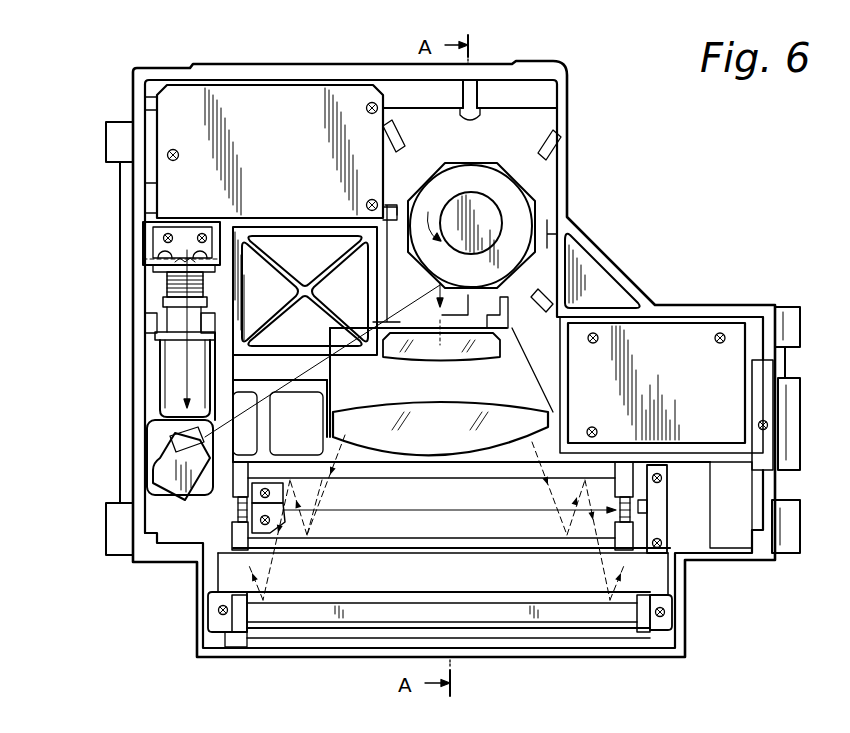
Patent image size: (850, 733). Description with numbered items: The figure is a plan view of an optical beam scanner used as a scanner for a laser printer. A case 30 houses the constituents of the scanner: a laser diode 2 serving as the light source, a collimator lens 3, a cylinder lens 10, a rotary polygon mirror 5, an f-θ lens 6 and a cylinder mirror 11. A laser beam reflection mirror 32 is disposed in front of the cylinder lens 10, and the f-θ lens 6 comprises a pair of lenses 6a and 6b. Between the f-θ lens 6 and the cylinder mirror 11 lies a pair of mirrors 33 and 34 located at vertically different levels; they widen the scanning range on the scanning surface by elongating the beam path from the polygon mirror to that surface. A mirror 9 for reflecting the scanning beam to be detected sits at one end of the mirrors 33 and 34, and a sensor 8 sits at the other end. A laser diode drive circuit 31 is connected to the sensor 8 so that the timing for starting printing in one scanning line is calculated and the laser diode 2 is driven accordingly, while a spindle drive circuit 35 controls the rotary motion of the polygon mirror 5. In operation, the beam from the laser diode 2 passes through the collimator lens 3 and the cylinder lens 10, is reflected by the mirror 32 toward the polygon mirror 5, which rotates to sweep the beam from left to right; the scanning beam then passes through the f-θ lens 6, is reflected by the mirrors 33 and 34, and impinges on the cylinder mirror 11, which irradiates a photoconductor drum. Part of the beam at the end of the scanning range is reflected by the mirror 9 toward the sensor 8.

The laser diode 2 is at (147, 243).
The collimator lens 3 is at (165, 283).
The rotary polygon mirror 5 is at (513, 190).
The f-θ lens 6 is at (505, 365).
The lens 6a is at (425, 345).
The lens 6b is at (476, 430).
The sensor 8 is at (647, 505).
The mirror 9 is at (270, 512).
The cylinder lens 10 is at (162, 345).
The cylinder mirror 11 is at (322, 613).
The case 30 is at (570, 97).
The laser diode drive circuit 31 is at (272, 95).
The laser beam reflection mirror 32 is at (168, 440).
The mirror 33 is at (602, 472).
The mirror 34 is at (557, 547).
The spindle drive circuit 35 is at (702, 337).